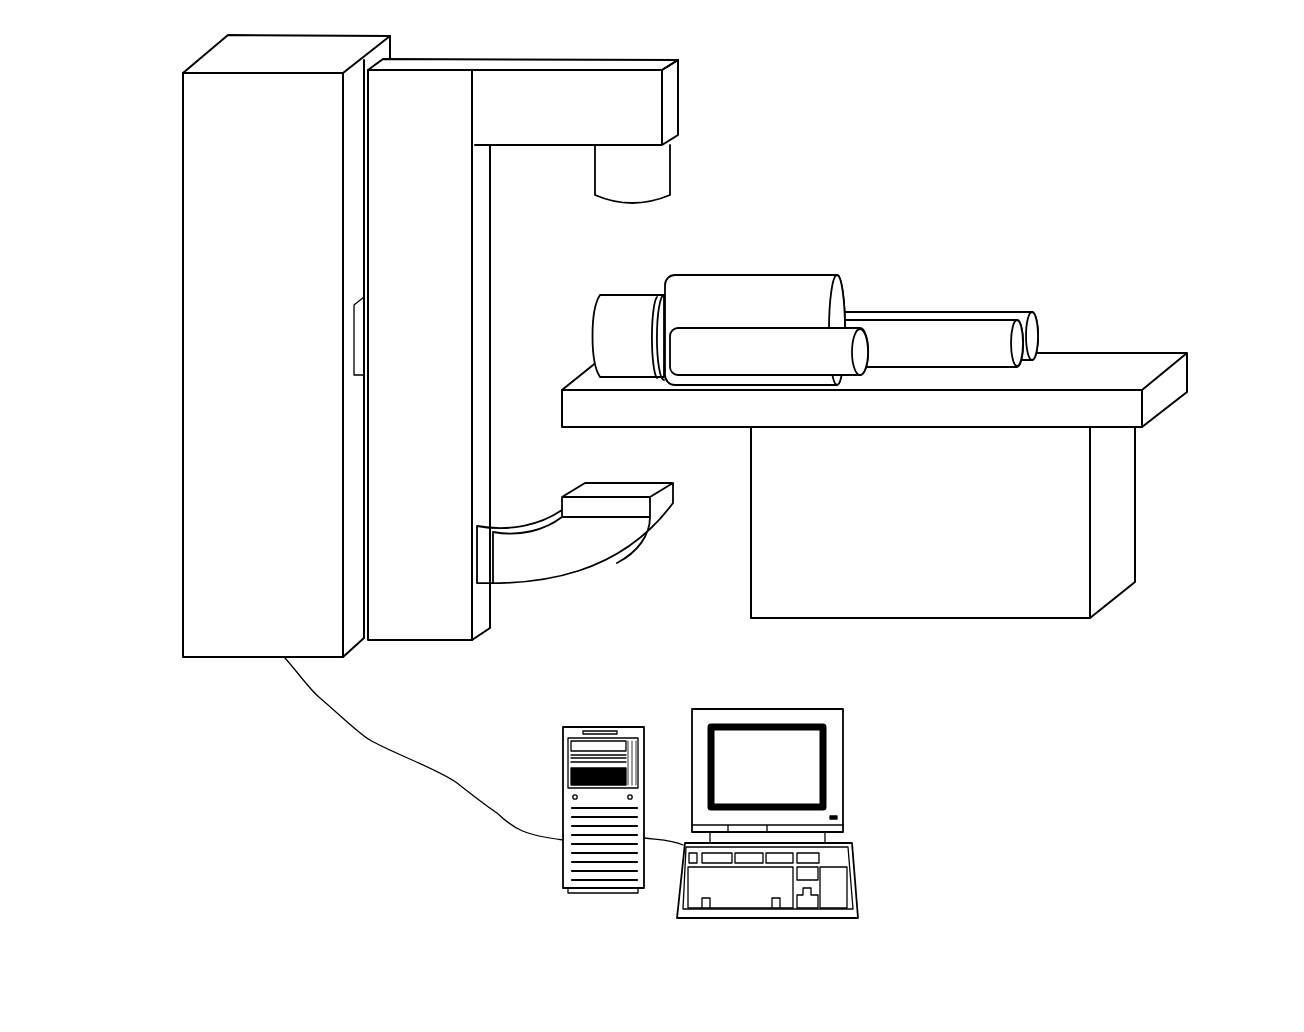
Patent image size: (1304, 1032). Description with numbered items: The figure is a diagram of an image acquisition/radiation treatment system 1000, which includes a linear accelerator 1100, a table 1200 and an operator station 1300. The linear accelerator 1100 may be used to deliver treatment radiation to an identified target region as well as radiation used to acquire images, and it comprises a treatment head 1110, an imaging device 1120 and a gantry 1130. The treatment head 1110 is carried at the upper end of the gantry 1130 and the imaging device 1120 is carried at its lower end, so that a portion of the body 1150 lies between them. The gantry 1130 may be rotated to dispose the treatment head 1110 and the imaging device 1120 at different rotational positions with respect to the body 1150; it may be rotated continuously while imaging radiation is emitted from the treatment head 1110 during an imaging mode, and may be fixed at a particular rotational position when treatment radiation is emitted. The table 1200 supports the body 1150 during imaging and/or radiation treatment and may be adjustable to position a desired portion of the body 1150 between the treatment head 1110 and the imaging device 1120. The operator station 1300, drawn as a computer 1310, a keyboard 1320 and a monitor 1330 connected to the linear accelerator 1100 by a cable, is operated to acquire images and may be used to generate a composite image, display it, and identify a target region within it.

The system 1000 is at (936, 118).
The linear accelerator 1100 is at (728, 190).
The treatment head 1110 is at (615, 202).
The imaging device 1120 is at (650, 535).
The gantry 1130 is at (435, 62).
The body 1150 is at (805, 275).
The table 1200 is at (1120, 367).
The operator station 1300 is at (878, 766).
The computer 1310 is at (618, 725).
The keyboard 1320 is at (855, 868).
The monitor 1330 is at (767, 707).